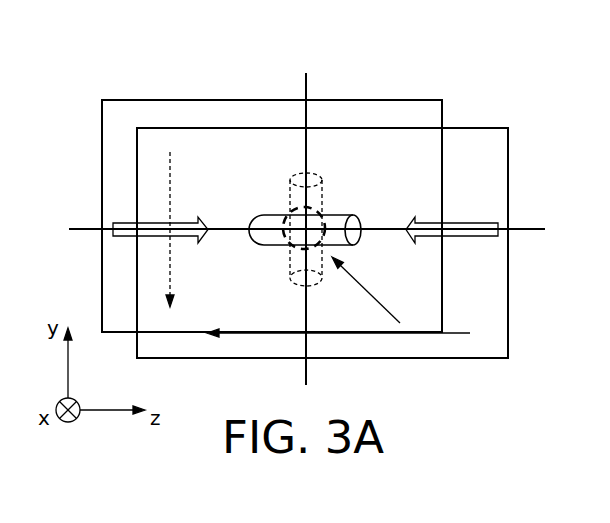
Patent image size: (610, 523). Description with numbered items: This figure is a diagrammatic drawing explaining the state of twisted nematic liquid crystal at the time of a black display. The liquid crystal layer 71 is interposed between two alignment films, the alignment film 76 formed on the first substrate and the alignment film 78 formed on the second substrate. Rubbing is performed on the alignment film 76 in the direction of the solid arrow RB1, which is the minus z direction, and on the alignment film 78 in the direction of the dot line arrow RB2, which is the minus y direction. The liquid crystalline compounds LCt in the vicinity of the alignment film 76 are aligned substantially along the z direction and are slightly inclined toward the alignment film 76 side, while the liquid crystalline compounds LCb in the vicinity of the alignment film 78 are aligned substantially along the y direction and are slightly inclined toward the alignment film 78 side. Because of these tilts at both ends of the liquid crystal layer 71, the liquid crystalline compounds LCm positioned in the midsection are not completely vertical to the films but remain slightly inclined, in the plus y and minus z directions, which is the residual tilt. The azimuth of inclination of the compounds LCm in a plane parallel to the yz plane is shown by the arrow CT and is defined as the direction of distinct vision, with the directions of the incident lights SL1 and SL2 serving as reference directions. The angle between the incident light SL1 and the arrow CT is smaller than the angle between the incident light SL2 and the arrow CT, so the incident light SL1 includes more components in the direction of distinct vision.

The liquid crystal layer 71 is at (228, 112).
The alignment film 78 is at (378, 103).
The alignment film 76 is at (470, 131).
The incident light SL2 is at (125, 222).
The incident light SL1 is at (487, 220).
The liquid crystalline compounds LCb is at (290, 200).
The liquid crystalline compounds LCm is at (316, 197).
The liquid crystalline compounds LCt is at (344, 211).
The dot line arrow RB2 is at (170, 248).
The solid arrow RB1 is at (343, 335).
The arrow CT is at (377, 300).